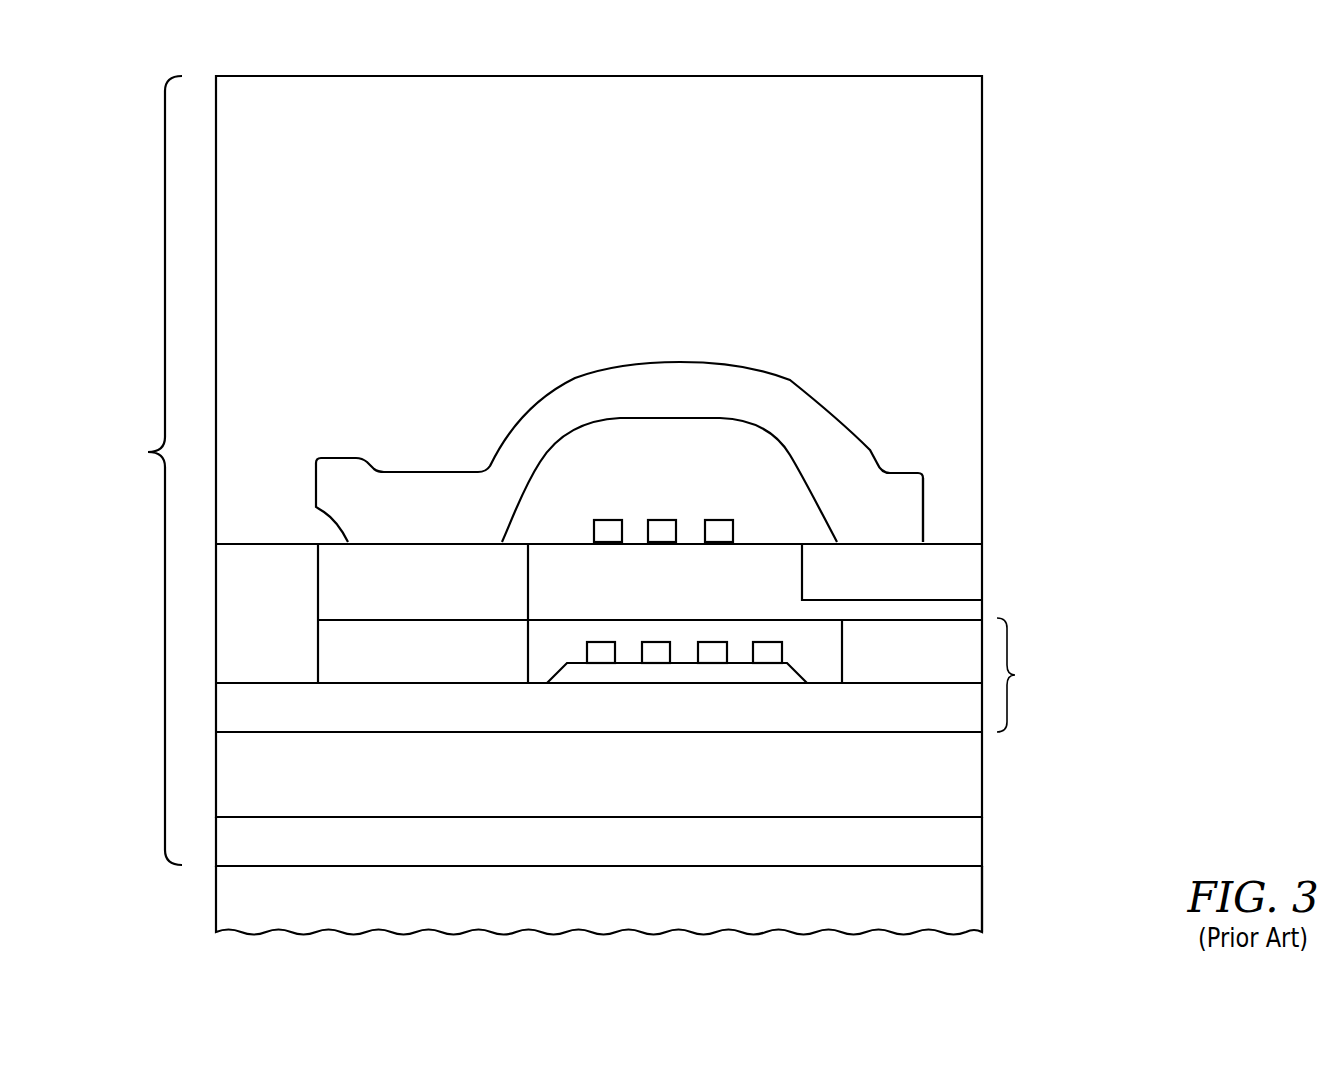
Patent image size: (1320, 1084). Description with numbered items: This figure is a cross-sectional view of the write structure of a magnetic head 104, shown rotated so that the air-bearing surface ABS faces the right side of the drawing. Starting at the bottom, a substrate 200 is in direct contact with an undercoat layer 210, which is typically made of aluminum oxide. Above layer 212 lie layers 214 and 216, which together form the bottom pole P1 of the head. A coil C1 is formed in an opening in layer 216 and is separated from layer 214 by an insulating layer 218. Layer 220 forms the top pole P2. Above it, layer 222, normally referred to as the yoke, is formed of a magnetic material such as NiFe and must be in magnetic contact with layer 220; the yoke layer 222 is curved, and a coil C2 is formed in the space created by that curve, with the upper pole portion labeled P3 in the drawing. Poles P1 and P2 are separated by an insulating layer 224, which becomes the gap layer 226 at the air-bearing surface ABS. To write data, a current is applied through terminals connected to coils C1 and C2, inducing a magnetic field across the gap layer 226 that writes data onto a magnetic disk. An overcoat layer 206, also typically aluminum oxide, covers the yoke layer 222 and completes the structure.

The magnetic head 104 is at (141, 470).
The overcoat layer 206 is at (275, 190).
The yoke layer 222 is at (864, 527).
The third pole P3 is at (922, 497).
The insulating layer 224 is at (760, 542).
The coil C2 is at (644, 498).
The layer forming top pole 220 is at (895, 590).
The top pole P2 is at (984, 563).
The gap layer 226 is at (1001, 604).
The layer forming bottom pole 216 is at (417, 667).
The coil C1 is at (562, 637).
The insulating layer 218 is at (678, 677).
The layer forming bottom pole 214 is at (895, 725).
The bottom pole P1 is at (1021, 675).
The layer 212 is at (275, 788).
The undercoat layer 210 is at (984, 843).
The substrate 200 is at (984, 926).
The air-bearing surface ABS is at (1040, 876).